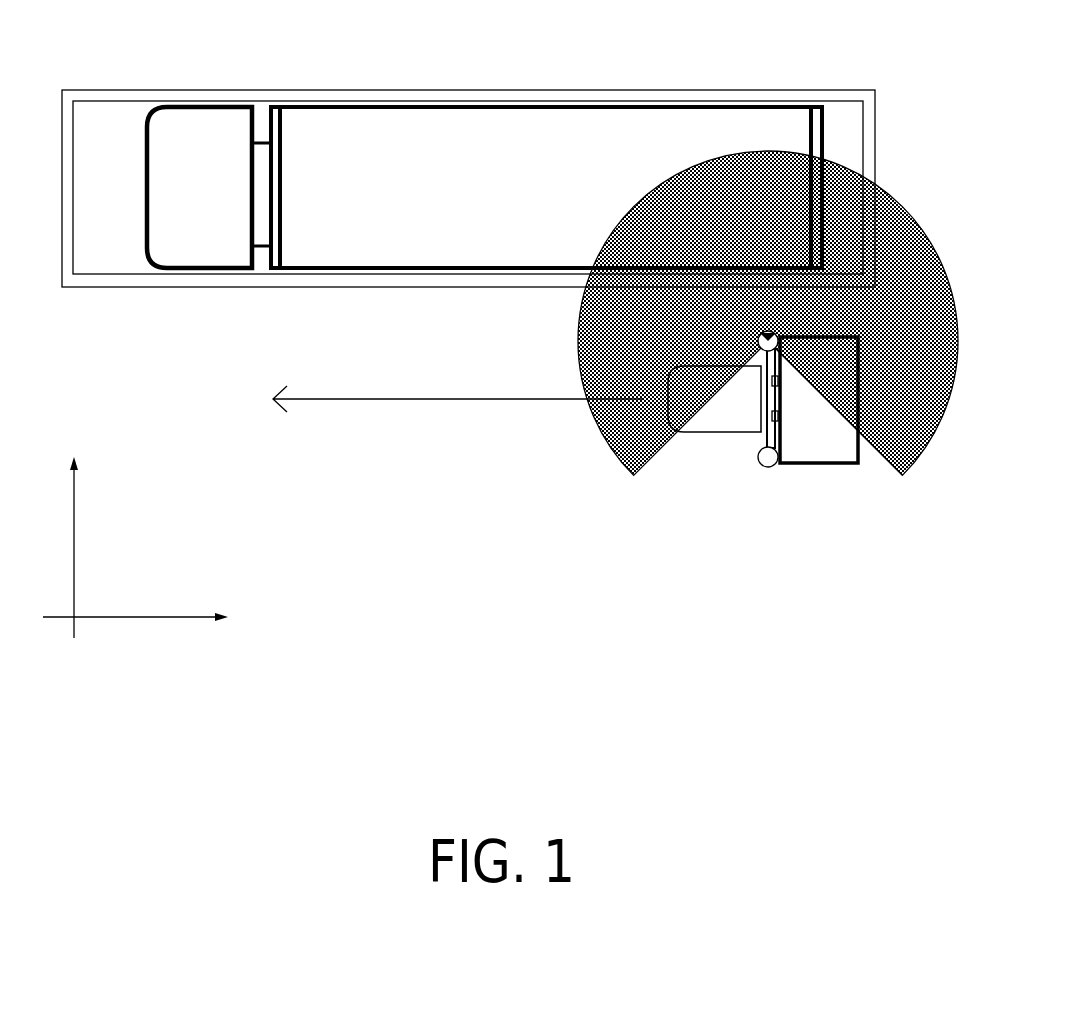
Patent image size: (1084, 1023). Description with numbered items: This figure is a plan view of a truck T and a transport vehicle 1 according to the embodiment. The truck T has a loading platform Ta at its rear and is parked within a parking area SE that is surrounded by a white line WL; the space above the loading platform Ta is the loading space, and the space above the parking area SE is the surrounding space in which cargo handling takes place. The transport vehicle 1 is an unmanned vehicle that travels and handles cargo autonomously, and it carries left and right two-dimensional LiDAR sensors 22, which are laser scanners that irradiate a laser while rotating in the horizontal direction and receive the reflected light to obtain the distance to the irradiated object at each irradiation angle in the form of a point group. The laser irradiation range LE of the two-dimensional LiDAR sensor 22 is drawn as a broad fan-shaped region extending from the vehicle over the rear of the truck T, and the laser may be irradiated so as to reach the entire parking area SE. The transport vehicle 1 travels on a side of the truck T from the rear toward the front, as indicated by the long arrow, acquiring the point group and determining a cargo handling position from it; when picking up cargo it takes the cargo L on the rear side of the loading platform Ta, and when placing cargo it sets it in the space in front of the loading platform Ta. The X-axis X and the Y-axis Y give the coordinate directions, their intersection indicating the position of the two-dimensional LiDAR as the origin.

The transport vehicle 1 is at (751, 441).
The two-dimensional LiDAR sensor 22 is at (758, 347).
The cargo L is at (817, 442).
The laser irradiation range LE is at (908, 217).
The truck T is at (203, 130).
The loading platform Ta is at (540, 200).
The white line WL is at (661, 96).
The parking area SE is at (127, 199).
The X-axis X is at (135, 597).
The Y-axis Y is at (83, 541).